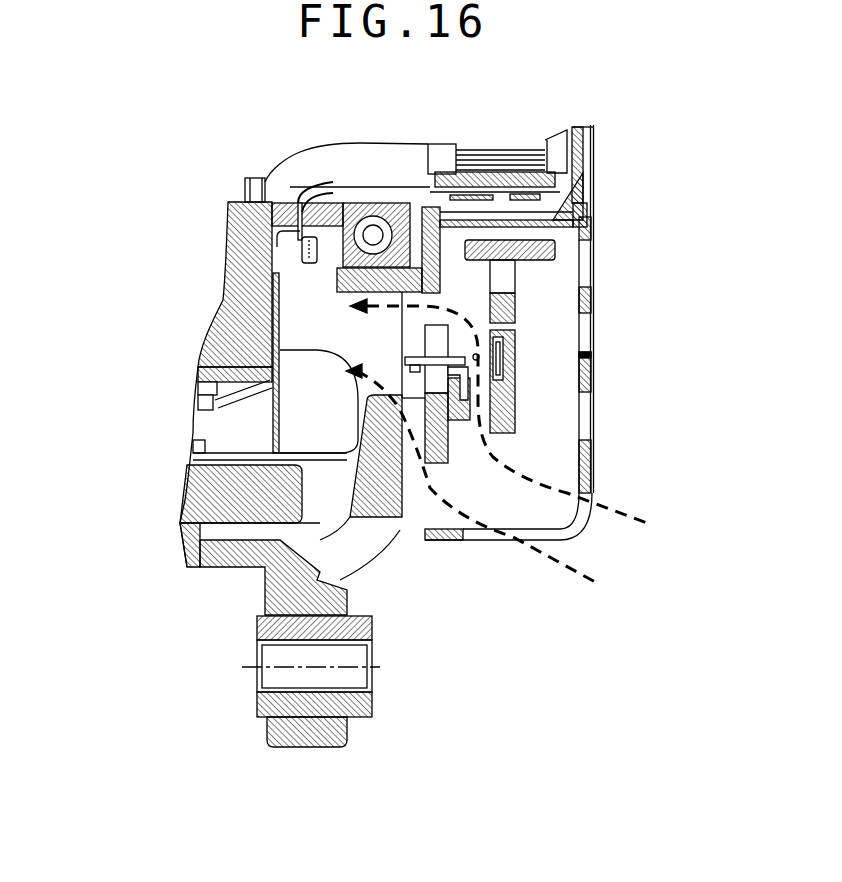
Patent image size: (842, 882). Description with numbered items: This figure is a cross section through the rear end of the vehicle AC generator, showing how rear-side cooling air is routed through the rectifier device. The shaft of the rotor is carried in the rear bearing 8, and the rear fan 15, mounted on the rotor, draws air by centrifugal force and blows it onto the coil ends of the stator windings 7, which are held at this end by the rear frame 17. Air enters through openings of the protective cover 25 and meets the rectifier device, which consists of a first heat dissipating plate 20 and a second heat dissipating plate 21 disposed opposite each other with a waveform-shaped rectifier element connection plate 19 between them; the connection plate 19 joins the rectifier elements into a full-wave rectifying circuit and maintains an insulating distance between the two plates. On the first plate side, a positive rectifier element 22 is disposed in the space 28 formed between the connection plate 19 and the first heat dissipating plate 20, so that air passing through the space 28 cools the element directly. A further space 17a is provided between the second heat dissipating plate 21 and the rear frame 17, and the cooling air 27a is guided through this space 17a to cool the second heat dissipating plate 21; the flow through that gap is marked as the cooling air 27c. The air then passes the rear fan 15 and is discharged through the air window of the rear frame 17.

The stator windings 7 is at (207, 487).
The rear bearing 8 is at (373, 203).
The rear fan 15 is at (300, 375).
The rear frame 17 is at (400, 473).
The space between second heat dissipating plate and rear frame 17a is at (418, 433).
The rectifier element connection plate 19 is at (465, 413).
The first heat dissipating plate 20 is at (508, 320).
The second heat dissipating plate 21 is at (440, 462).
The positive rectifier element 22 is at (500, 372).
The protective cover 25 is at (593, 228).
The cooling air 27a is at (523, 417).
The cooling air passing through space between second heat dissipating plate and rear 27c is at (492, 479).
The space on the side of the first heat dissipating plate 28 is at (490, 400).